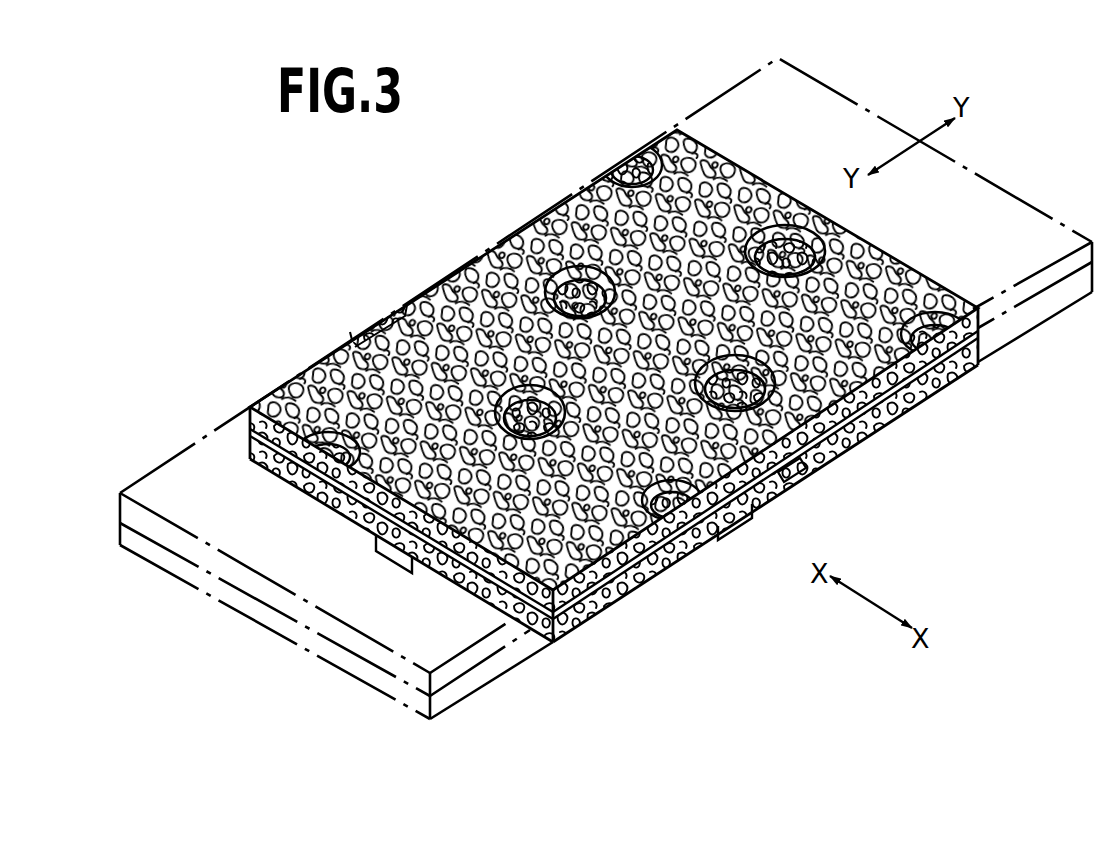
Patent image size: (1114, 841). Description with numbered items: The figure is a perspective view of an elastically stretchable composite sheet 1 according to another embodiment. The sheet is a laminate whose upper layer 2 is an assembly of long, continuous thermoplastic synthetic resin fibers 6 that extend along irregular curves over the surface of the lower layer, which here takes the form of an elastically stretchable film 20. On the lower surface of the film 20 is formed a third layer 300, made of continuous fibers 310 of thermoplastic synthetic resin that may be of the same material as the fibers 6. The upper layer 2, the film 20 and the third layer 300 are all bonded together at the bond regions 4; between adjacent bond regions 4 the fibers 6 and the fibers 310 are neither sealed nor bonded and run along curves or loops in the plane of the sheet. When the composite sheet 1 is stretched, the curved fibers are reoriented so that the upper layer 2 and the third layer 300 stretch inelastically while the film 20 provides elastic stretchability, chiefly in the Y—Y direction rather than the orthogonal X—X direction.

The elastically stretchable composite sheet 1 is at (570, 140).
The upper layer 2 is at (876, 398).
The bond regions 4 is at (684, 520).
The continuous fibers 6 is at (455, 296).
The film 20 is at (790, 476).
The third layer 300 is at (392, 550).
The continuous fibers 310 is at (733, 531).